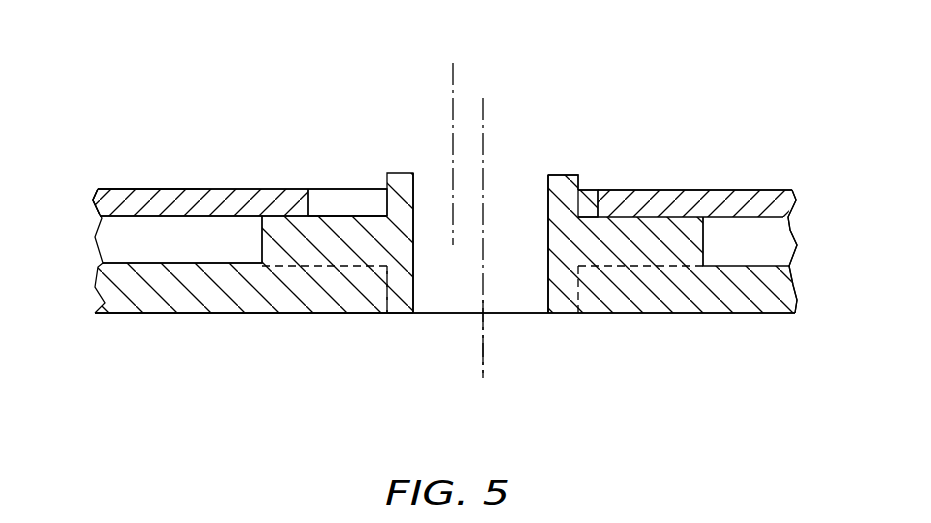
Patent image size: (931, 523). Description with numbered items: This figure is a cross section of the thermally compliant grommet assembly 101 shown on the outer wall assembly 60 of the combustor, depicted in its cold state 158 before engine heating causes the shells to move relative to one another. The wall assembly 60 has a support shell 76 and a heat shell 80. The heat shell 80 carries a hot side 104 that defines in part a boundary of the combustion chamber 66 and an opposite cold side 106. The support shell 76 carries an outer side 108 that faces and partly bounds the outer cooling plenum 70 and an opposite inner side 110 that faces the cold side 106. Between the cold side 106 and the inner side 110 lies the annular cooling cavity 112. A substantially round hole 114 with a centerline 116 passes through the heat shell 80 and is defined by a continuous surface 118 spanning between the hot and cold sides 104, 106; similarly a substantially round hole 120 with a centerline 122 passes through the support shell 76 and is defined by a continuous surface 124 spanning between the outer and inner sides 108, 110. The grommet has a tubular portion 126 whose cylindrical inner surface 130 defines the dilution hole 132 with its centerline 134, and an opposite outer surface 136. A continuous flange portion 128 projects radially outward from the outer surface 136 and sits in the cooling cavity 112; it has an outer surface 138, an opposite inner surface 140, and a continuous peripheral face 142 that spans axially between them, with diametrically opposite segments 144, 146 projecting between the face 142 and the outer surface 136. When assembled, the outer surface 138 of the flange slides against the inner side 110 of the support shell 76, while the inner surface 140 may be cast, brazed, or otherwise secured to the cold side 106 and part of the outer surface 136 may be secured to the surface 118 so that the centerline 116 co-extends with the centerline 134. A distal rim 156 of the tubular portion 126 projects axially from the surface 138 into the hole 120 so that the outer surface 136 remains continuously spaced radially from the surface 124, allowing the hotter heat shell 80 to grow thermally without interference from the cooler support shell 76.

The outer wall assembly 60 is at (62, 108).
The grommet assembly 101 is at (98, 112).
The cold state 158 is at (158, 78).
The support shell 76 is at (112, 189).
The outer plenum 70 is at (194, 149).
The flange portion 128 is at (254, 238).
The continuous surface 124 is at (318, 188).
The hole 120 is at (347, 188).
The tubular portion 126 is at (400, 168).
The centerline 122 is at (453, 78).
The centerline 134 is at (483, 110).
The inner surface 130 is at (553, 195).
The distal rim 156 is at (563, 174).
The outer surface 136 is at (600, 190).
The outer surface 138 is at (662, 190).
The outer side 108 is at (710, 190).
The cold side 106 is at (790, 232).
The cooling cavity 112 is at (170, 250).
The dilution hole 132 is at (538, 273).
The heat shell 80 is at (128, 313).
The combustion chamber 66 is at (194, 370).
The segment 144 is at (283, 242).
The inner surface 140 is at (313, 267).
The continuous surface 118 is at (398, 302).
The centerline 116 is at (483, 352).
The hole 114 is at (558, 313).
The segment 146 is at (660, 237).
The peripheral face 142 is at (723, 222).
The inner side 110 is at (772, 223).
The hot side 104 is at (676, 313).